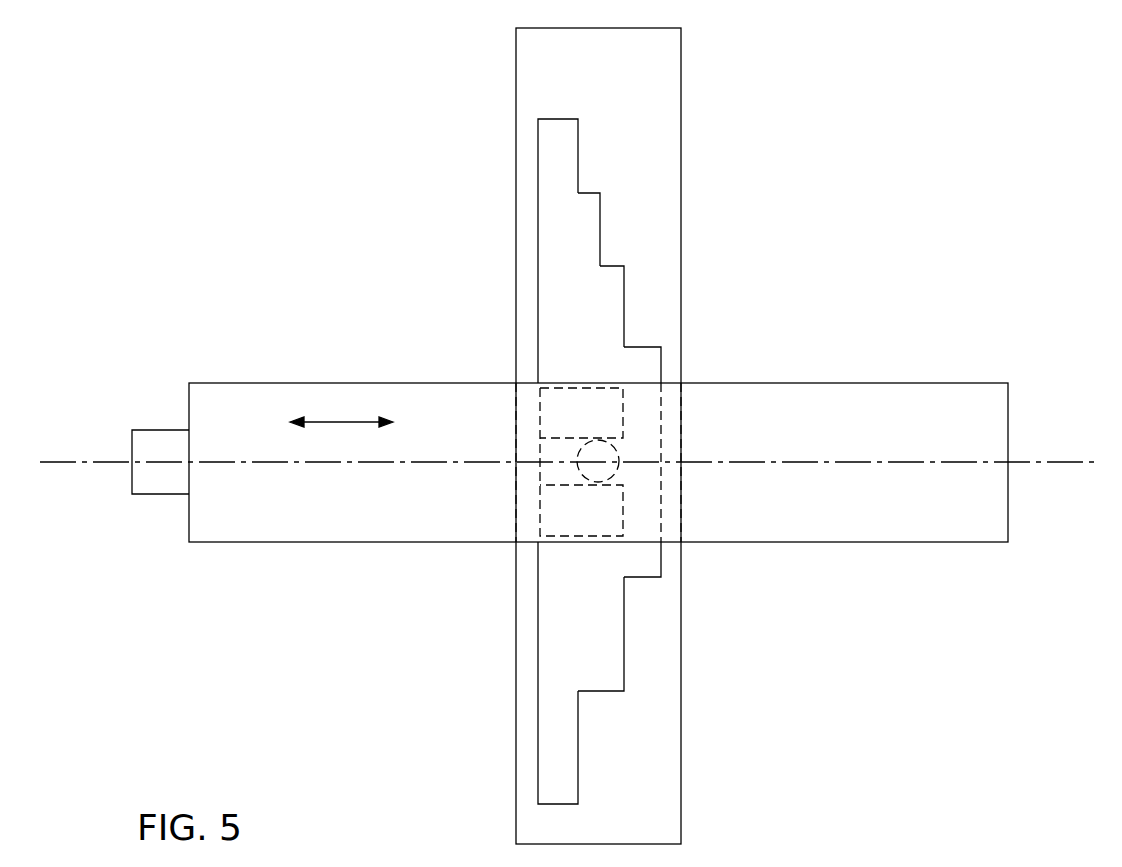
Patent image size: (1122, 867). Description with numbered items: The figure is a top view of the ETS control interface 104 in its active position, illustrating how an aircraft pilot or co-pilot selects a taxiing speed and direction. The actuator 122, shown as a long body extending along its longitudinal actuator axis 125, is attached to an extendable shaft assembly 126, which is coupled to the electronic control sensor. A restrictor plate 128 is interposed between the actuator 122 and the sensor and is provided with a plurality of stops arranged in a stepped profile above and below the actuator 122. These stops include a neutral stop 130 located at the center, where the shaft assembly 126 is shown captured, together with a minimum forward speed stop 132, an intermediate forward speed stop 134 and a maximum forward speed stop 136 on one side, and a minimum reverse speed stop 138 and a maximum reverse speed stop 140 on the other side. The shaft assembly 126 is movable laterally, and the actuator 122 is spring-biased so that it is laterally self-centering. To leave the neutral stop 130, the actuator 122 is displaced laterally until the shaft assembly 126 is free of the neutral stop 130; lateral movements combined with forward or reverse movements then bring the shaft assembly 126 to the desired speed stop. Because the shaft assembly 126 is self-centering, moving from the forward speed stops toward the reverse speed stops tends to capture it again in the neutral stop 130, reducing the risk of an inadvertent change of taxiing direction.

The control interface 104 is at (826, 266).
The actuator 122 is at (227, 543).
The longitudinal actuator axis 125 is at (1070, 462).
The extendable shaft assembly 126 is at (620, 458).
The restrictor plate 128 is at (681, 135).
The neutral stop 130 is at (559, 486).
The minimum forward speed stop 132 is at (611, 268).
The intermediate forward speed stop 134 is at (590, 196).
The maximum forward speed stop 136 is at (559, 121).
The minimum reverse speed stop 138 is at (598, 690).
The maximum reverse speed stop 140 is at (554, 803).